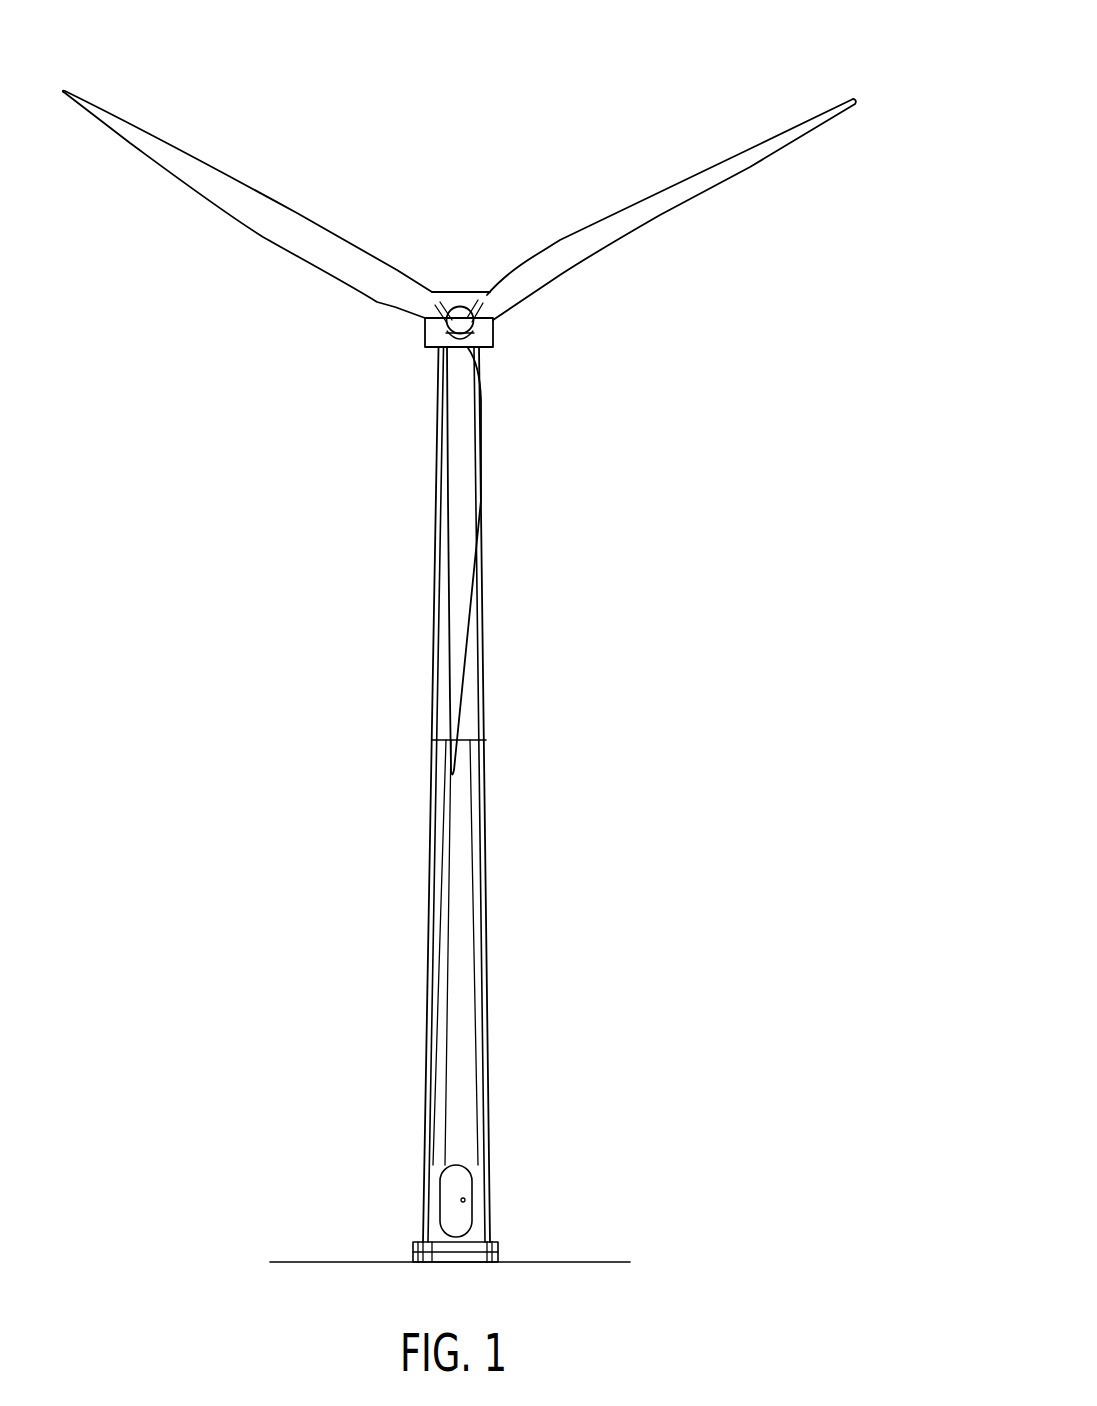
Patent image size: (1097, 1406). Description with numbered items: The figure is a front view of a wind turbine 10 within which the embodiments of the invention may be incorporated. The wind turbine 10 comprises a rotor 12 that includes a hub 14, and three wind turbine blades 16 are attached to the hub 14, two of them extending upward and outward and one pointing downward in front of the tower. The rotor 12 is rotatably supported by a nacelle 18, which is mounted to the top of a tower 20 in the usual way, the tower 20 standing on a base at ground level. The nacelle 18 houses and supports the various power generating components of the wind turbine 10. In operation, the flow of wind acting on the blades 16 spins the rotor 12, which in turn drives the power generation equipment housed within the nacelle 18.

The wind turbine 10 is at (679, 77).
The rotor 12 is at (387, 365).
The hub 14 is at (458, 312).
The wind turbine blades 16 is at (295, 223).
The nacelle 18 is at (495, 333).
The tower 20 is at (482, 860).